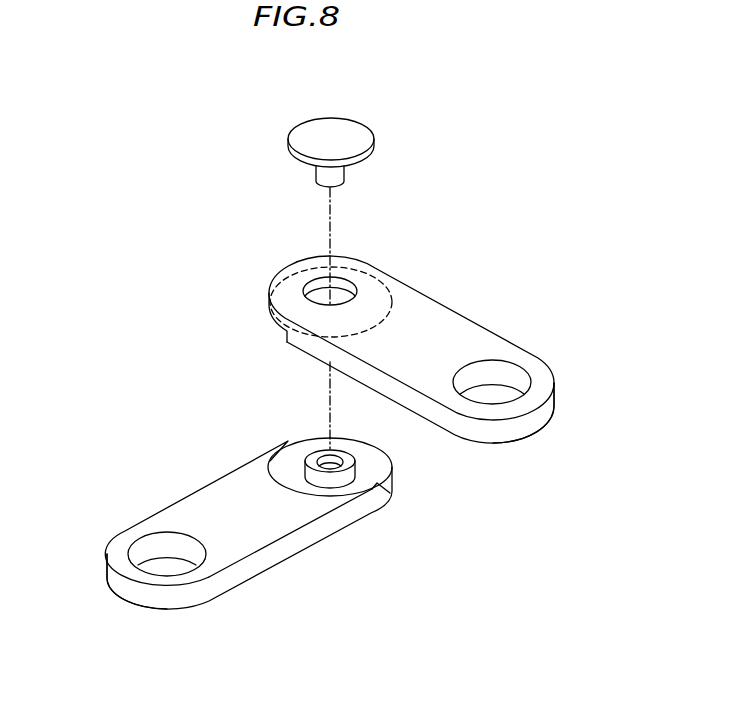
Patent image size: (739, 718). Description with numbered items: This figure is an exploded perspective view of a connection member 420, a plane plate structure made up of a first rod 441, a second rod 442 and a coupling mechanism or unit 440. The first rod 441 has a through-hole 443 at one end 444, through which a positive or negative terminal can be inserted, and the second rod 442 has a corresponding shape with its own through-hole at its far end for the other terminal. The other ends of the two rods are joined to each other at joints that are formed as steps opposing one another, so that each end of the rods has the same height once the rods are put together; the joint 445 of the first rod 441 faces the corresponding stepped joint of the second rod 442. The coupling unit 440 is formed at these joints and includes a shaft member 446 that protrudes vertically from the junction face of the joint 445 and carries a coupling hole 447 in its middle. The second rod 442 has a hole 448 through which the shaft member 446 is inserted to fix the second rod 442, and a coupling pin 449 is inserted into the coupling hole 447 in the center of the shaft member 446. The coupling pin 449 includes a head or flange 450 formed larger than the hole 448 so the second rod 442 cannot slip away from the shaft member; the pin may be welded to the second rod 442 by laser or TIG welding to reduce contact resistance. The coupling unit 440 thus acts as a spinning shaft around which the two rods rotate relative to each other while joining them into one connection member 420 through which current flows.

The connection member 420 is at (141, 163).
The coupling mechanism or unit 440 is at (326, 111).
The head or flange 450 is at (347, 135).
The coupling pin 449 is at (317, 177).
The second rod 442 is at (445, 322).
The hole 448 is at (347, 297).
The first rod 441 is at (223, 492).
The through-hole 443 is at (173, 562).
The end 444 is at (118, 548).
The joint 445 is at (392, 492).
The shaft member 446 is at (329, 463).
The coupling hole 447 is at (356, 459).